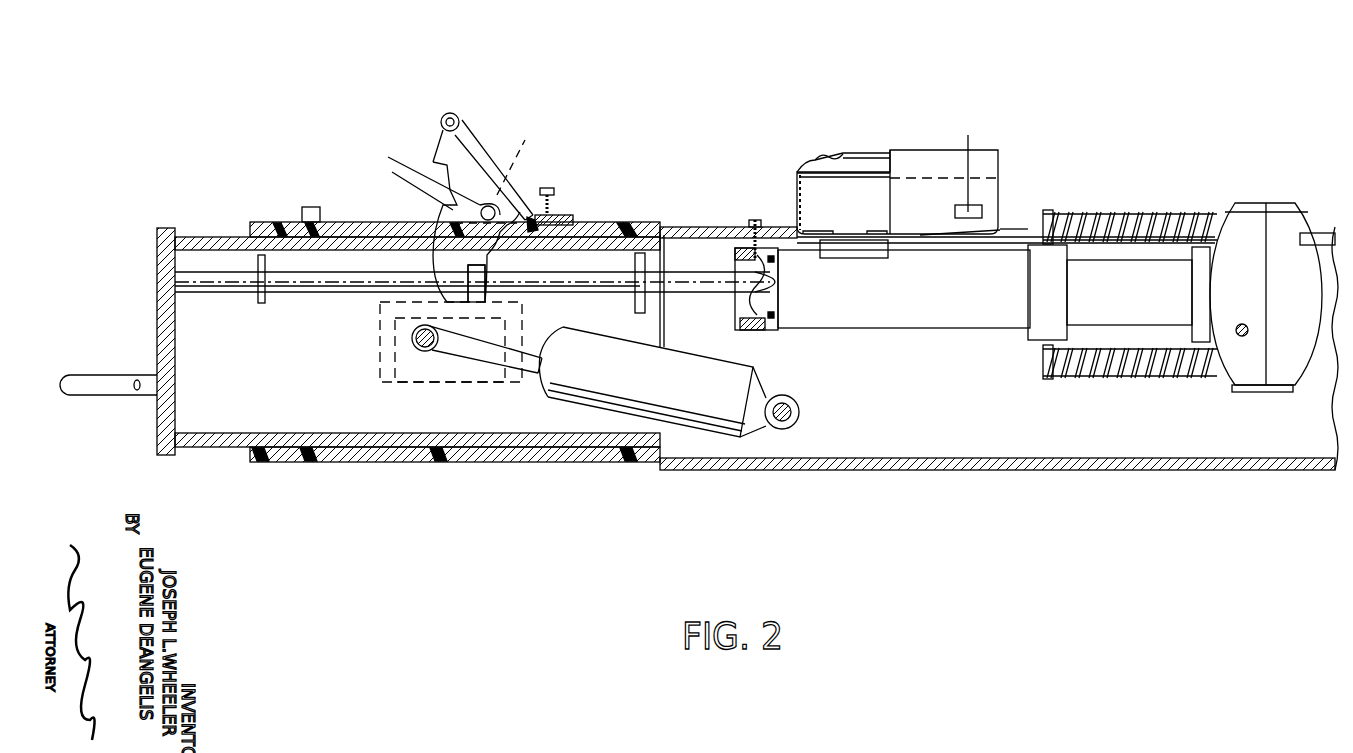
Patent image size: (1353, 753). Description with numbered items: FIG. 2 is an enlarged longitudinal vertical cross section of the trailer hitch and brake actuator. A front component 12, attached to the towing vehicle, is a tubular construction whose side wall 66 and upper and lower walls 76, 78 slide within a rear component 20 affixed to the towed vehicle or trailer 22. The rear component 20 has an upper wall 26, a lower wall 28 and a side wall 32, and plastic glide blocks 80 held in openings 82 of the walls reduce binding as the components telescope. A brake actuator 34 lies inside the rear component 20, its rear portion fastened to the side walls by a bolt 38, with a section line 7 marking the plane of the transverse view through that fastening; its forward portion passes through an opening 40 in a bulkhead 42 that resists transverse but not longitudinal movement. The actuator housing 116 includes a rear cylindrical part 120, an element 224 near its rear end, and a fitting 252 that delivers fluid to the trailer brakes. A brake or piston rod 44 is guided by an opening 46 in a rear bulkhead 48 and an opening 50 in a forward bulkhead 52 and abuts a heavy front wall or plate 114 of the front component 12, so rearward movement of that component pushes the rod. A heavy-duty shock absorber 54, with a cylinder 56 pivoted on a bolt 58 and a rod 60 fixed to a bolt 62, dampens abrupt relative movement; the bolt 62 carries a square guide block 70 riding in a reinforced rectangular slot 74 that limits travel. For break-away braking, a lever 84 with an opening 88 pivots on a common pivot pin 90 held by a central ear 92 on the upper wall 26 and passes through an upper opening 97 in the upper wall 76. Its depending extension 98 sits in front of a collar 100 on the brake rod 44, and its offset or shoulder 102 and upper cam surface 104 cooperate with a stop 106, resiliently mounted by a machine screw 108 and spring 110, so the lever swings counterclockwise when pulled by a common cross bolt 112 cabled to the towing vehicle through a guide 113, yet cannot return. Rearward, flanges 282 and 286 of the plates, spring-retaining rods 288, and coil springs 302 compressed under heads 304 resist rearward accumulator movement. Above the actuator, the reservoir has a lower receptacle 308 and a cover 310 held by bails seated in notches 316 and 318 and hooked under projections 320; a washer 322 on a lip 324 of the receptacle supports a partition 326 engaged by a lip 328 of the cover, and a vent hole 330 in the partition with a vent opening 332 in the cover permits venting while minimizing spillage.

The section line 7- 7 is at (1352, 183).
The front component 12 is at (217, 230).
The rear component 20 is at (710, 188).
The towed vehicle or trailer 22 is at (998, 233).
The upper wall 26 is at (690, 226).
The lower wall 28 is at (681, 470).
The side wall 32 is at (882, 460).
The brake actuator 34 is at (912, 329).
The bolt 38 is at (1242, 330).
The opening 40 is at (788, 322).
The bulkhead 42 is at (766, 332).
The brake rod 44 is at (570, 258).
The opening 46 is at (653, 283).
The rear bulkhead 48 is at (663, 317).
The opening 50 is at (250, 298).
The forward bulkhead 52 is at (264, 303).
The shock absorber 54 is at (551, 393).
The cylinder 56 is at (697, 449).
The bolt 58 is at (793, 423).
The rod 60 is at (474, 363).
The bolt 62 is at (410, 340).
The side wall 66 is at (384, 443).
The guide block 70 is at (454, 375).
The rectangular slot 74 is at (356, 345).
The upper wall 76 is at (237, 235).
The lower wall 78 is at (232, 453).
The plastic glide blocks 80 is at (287, 222).
The openings 82 is at (290, 223).
The lever 84 is at (438, 150).
The openings 88 is at (410, 180).
The pivot pin 90 is at (410, 167).
The central ear 92 is at (525, 142).
The upper opening 97 is at (358, 229).
The depending extension 98 is at (428, 262).
The collar 100 is at (488, 299).
The offset or shoulder 102 is at (508, 258).
The cam surface 104 is at (557, 223).
The stop 106 is at (548, 185).
The machine screw 108 is at (569, 208).
The spring 110 is at (565, 211).
The cross bolt 112 is at (450, 126).
The guide 113 is at (314, 205).
The front wall or plate 114 is at (155, 234).
The housing 116 is at (915, 302).
The rear housing part 120 is at (1140, 302).
The bearing 224 is at (1215, 205).
The fitting 252 is at (1098, 245).
The flanges 282 is at (1310, 197).
The flanges 286 is at (1227, 385).
The spring-retaining rods 288 is at (1100, 218).
The coil springs 302 is at (1068, 210).
The heads 304 is at (1043, 385).
The lower receptacle 308 is at (790, 206).
The cover 310 is at (880, 150).
The notch 316 is at (817, 146).
The notch 318 is at (967, 175).
The projections 320 is at (1010, 228).
The washer 322 is at (785, 173).
The lip 324 is at (795, 175).
The partition 326 is at (790, 154).
The lip 328 is at (790, 168).
The vent hole 330 is at (980, 203).
The vent opening 332 is at (848, 144).